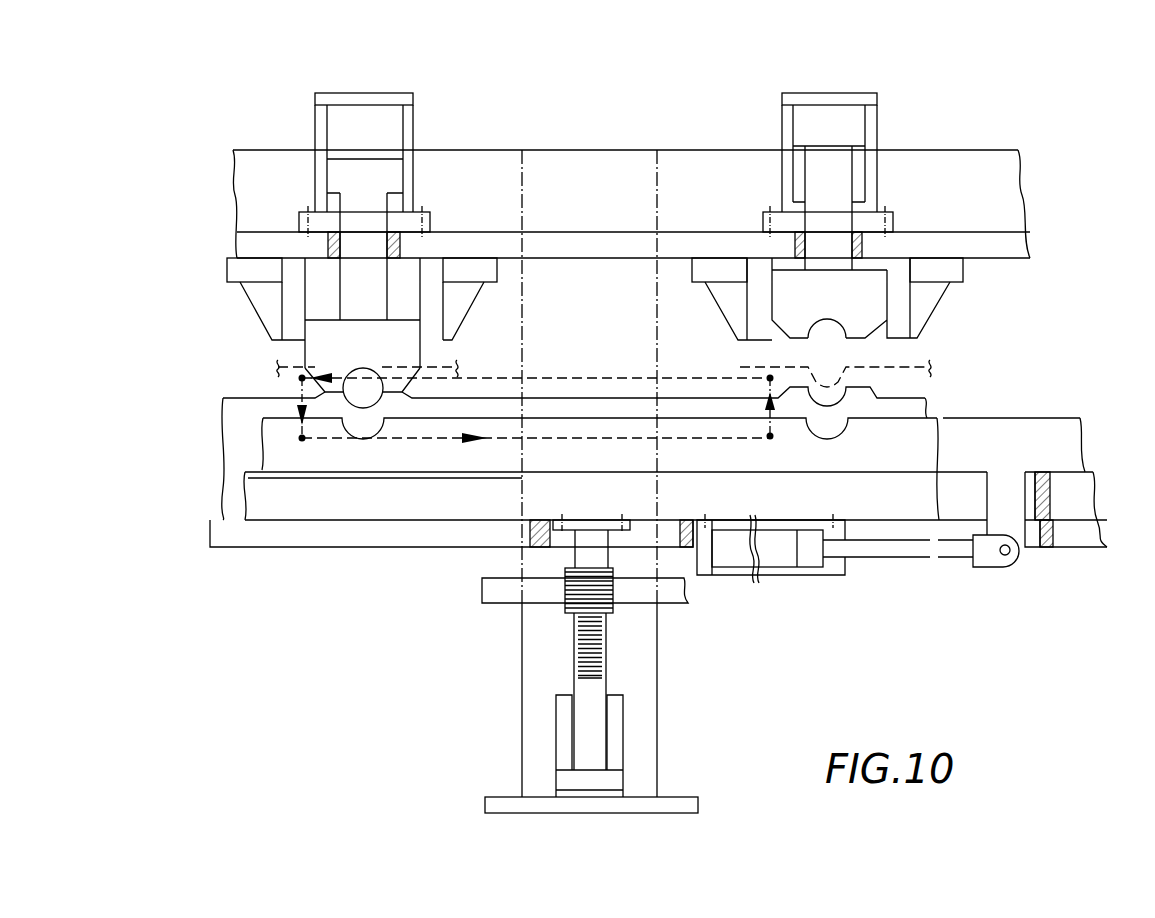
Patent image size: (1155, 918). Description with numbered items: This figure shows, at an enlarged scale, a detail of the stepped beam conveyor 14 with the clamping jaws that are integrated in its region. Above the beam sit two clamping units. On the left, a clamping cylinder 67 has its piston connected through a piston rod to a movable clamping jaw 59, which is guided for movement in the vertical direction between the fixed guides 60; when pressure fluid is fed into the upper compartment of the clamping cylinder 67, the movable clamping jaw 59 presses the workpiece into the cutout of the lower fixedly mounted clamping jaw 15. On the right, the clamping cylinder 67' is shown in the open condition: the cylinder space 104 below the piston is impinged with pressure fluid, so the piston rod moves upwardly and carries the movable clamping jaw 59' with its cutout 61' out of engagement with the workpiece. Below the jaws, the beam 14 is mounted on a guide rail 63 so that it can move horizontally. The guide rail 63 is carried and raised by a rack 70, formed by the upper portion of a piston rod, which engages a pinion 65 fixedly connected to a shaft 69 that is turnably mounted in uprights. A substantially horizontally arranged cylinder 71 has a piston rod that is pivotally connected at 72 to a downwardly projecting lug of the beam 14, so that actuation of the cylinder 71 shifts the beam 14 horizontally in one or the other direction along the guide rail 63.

The clamping cylinder 67 is at (318, 192).
The clamping cylinder 67' is at (869, 162).
The cylinder space 104 is at (860, 172).
The fixed guides 60 is at (292, 300).
The movable clamping jaw 59 is at (266, 362).
The movable clamping jaw 59' is at (896, 299).
The cutout 61' is at (954, 325).
The lower fixedly mounted clamping jaw 15 is at (238, 437).
The stepped beam conveyor 14 is at (288, 455).
The guide rail 63 is at (340, 497).
The shaft 69 is at (500, 594).
The pinion 65 is at (585, 595).
The rack 70 is at (588, 687).
The cylinder 71 is at (782, 560).
The pivotal connection 72 is at (1005, 560).